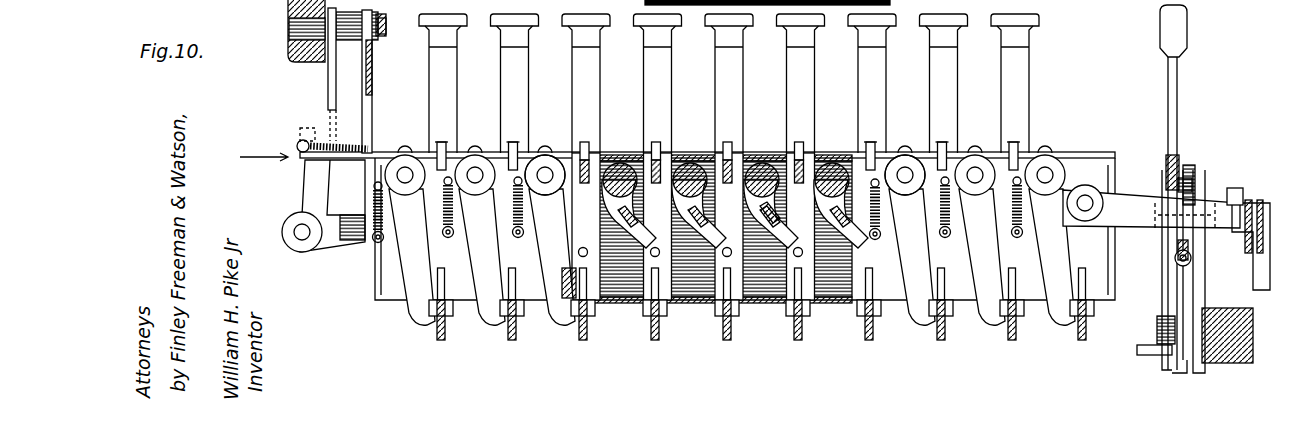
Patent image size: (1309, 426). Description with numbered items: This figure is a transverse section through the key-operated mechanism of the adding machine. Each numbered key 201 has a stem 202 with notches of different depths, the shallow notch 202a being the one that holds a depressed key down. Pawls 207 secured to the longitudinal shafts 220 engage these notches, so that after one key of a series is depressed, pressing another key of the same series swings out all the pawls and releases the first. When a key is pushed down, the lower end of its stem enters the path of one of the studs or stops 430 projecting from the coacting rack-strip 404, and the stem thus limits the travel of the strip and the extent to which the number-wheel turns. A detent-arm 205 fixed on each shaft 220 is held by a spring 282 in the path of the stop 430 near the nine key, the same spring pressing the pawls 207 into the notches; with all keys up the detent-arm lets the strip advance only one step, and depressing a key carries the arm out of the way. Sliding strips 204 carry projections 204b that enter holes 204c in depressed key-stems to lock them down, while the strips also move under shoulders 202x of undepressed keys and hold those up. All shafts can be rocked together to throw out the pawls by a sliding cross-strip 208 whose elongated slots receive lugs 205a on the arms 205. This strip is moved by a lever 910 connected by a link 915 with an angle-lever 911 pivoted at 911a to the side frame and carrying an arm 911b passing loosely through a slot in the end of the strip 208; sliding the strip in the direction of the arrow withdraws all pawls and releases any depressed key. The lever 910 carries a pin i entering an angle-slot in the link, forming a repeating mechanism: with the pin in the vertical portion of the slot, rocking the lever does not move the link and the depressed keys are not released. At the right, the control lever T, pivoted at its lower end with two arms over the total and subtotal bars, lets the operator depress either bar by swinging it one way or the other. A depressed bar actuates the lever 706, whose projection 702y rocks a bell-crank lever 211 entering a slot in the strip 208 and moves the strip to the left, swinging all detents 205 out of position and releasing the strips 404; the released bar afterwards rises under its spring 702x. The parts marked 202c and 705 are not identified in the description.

The numbered key 201 is at (527, 22).
The key stem 202 is at (592, 97).
The shallow notch 202a is at (600, 160).
The cam slot 202c is at (787, 238).
The shoulder 202x is at (560, 290).
The sliding strip 204 is at (518, 232).
The projection 204b is at (867, 240).
The hole 204c is at (655, 258).
The detent-arm 205 is at (405, 300).
The lug 205a is at (985, 140).
The pawl 207 is at (685, 160).
The sliding cross-strip 208 is at (455, 155).
The bell-crank lever 211 is at (1151, 206).
The longitudinal shaft 220 is at (545, 175).
The spring 282 is at (732, 224).
The rack-strip 404 is at (515, 330).
The stud or stop 430 is at (445, 320).
The spring 702x is at (1180, 242).
The projection 702y is at (1225, 185).
The pin 705 is at (1262, 200).
The lever 706 is at (1250, 185).
The lever 910 is at (328, 88).
The link 915 is at (369, 95).
The angle-lever 911 is at (340, 248).
The pivot 911a is at (300, 238).
The arm 911b is at (308, 170).
The pin or stud i is at (383, 26).
The control lever T is at (1203, 189).